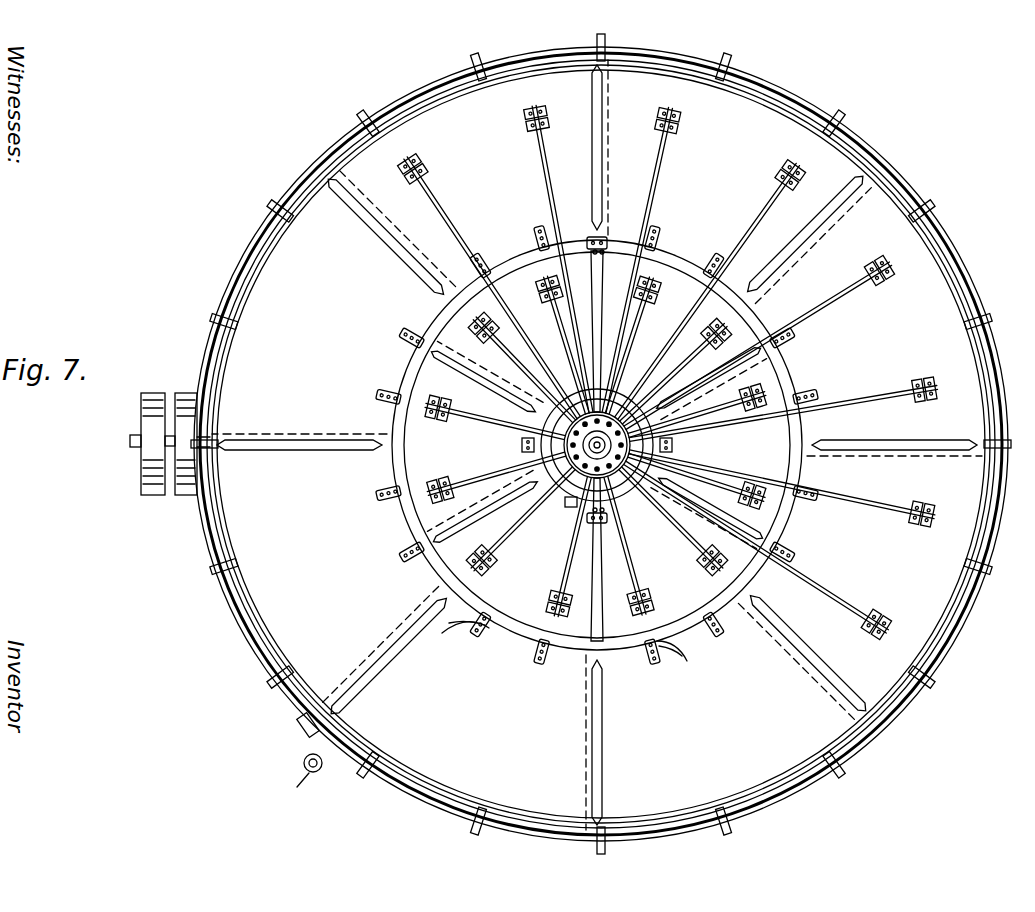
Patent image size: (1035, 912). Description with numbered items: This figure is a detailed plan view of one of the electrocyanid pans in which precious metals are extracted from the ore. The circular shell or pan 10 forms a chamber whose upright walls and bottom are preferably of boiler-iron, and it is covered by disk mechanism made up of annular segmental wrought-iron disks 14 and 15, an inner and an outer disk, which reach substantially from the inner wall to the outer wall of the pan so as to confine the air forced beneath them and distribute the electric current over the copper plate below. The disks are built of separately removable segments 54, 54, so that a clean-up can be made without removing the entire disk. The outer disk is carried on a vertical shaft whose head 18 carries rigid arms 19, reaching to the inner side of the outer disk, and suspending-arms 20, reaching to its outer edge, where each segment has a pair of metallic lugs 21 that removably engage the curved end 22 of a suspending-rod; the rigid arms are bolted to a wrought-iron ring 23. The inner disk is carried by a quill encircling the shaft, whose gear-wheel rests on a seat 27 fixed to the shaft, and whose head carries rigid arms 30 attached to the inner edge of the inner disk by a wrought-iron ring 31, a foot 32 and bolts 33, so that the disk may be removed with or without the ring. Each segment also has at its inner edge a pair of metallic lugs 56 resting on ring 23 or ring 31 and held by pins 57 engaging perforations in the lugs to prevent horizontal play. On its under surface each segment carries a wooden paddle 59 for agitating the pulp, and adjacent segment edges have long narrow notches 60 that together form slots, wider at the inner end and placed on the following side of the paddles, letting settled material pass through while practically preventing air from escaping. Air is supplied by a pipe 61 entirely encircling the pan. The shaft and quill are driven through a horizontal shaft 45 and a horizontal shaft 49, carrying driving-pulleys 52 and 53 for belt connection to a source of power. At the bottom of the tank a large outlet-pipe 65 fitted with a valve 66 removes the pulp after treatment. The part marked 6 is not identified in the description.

The base 6 is at (187, 600).
The circular shell or pan 10 is at (228, 300).
The annular segmental wrought-iron disk 14 is at (408, 548).
The annular segmental wrought-iron disk 15 is at (345, 180).
The head 18 is at (596, 445).
The rigid arms 19 is at (590, 338).
The suspending-arms 20 is at (560, 242).
The lugs 21 is at (420, 170).
The curved end of rod 22 is at (538, 118).
The wrought-iron ring 23 is at (396, 468).
The seat 27 is at (528, 452).
The rigid arms 30 is at (582, 478).
The wrought-iron ring 31 is at (625, 390).
The foot 32 is at (596, 238).
The bolts 33 is at (612, 246).
The horizontal shaft 45 is at (133, 440).
The horizontal shaft 49 is at (169, 439).
The driving-pulley 52 is at (145, 467).
The driving-pulley 53 is at (189, 391).
The segments 54 is at (607, 468).
The metallic lugs 56 is at (662, 238).
The pins 57 is at (563, 650).
The paddle 59 is at (290, 430).
The notches 60 is at (400, 250).
The pipe 61 is at (915, 198).
The outlet-pipe 65 is at (304, 732).
The valve 66 is at (306, 764).